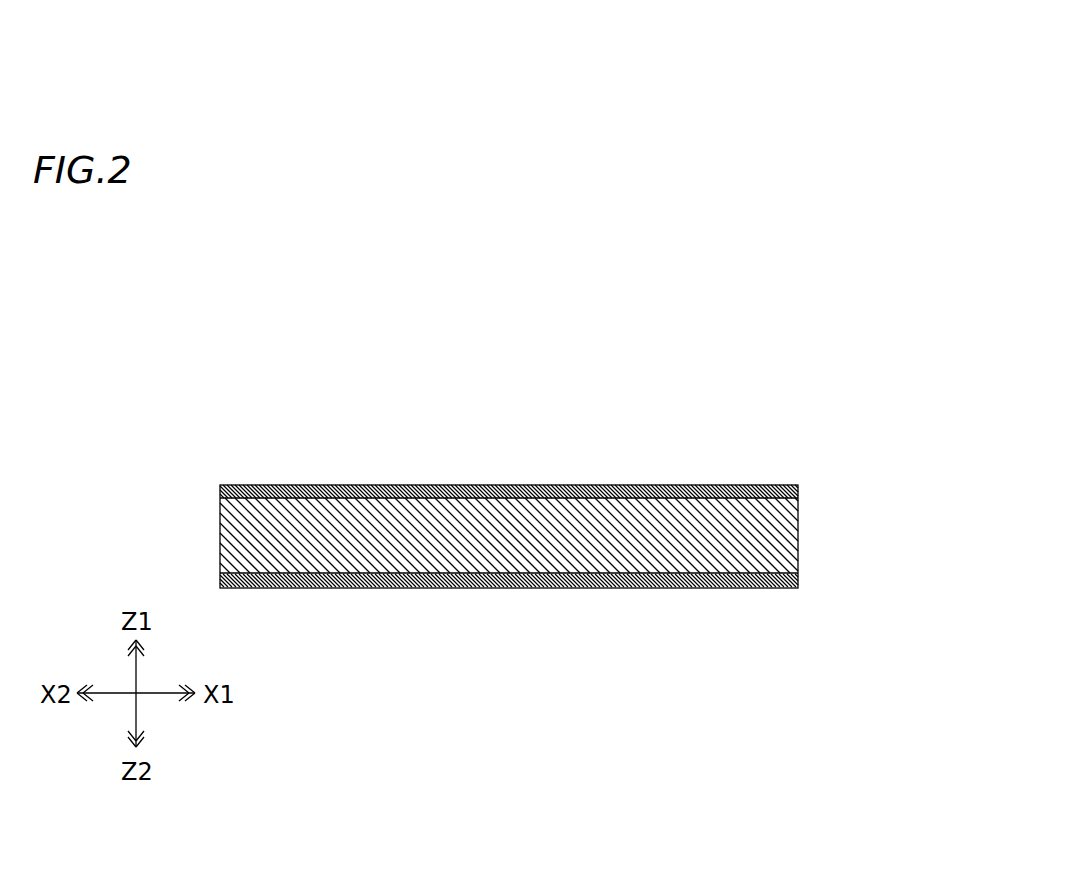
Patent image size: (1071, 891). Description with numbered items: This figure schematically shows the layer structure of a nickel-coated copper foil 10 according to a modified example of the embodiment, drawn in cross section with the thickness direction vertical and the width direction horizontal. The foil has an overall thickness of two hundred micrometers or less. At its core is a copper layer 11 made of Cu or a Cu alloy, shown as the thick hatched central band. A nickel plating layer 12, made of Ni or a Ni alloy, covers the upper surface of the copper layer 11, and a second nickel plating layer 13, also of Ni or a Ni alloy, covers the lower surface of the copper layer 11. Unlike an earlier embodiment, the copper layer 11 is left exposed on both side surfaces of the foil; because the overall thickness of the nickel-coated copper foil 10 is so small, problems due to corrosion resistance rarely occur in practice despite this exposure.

The nickel-coated copper foil 10 is at (551, 453).
The copper layer 11 is at (363, 513).
The nickel plating layer 12 is at (742, 485).
The nickel plating layer 13 is at (743, 589).